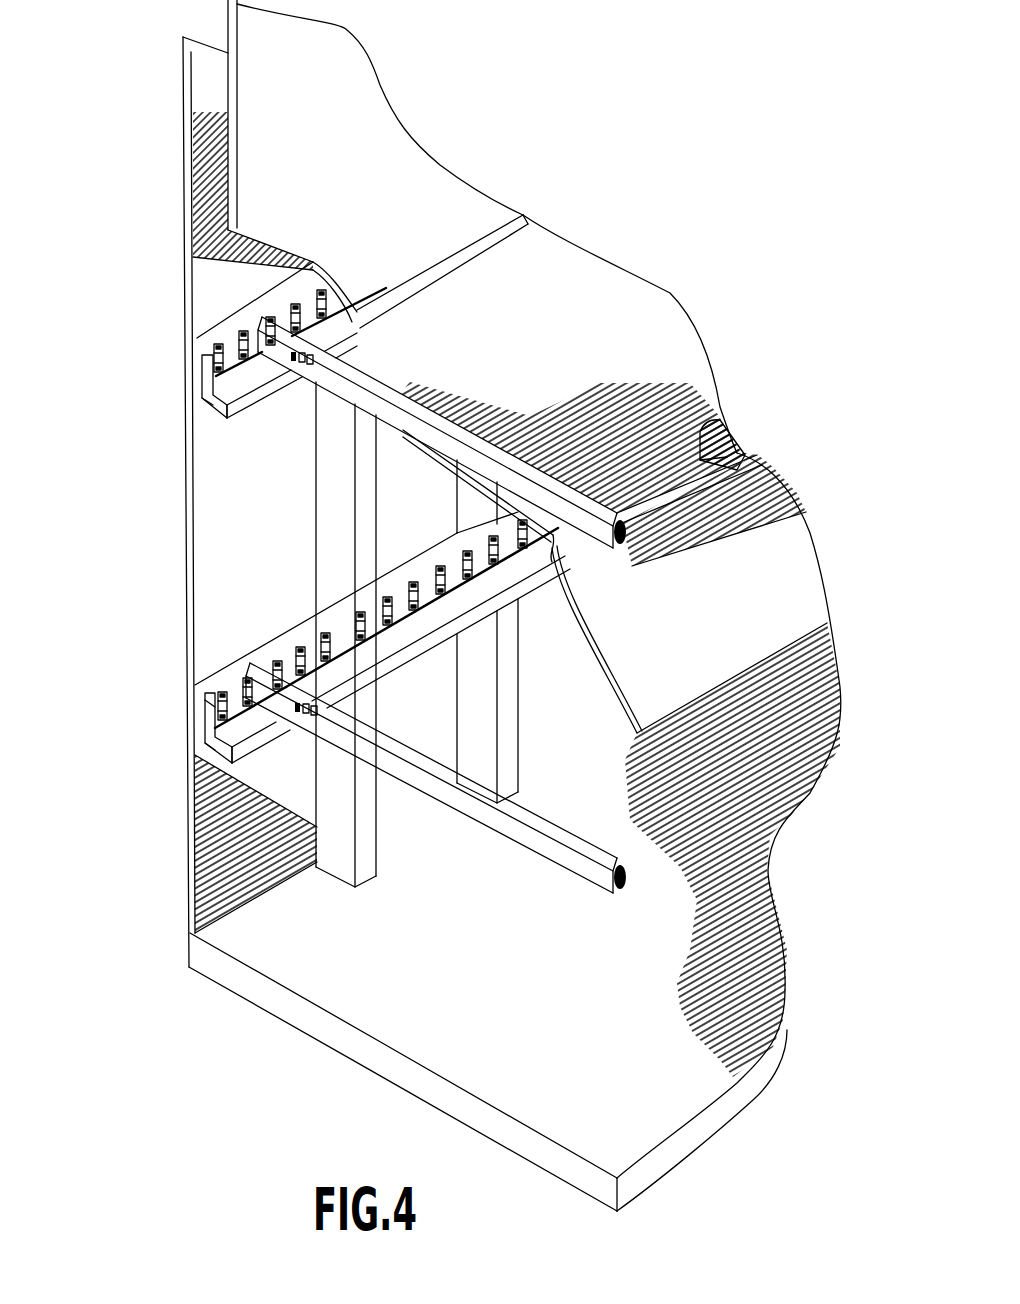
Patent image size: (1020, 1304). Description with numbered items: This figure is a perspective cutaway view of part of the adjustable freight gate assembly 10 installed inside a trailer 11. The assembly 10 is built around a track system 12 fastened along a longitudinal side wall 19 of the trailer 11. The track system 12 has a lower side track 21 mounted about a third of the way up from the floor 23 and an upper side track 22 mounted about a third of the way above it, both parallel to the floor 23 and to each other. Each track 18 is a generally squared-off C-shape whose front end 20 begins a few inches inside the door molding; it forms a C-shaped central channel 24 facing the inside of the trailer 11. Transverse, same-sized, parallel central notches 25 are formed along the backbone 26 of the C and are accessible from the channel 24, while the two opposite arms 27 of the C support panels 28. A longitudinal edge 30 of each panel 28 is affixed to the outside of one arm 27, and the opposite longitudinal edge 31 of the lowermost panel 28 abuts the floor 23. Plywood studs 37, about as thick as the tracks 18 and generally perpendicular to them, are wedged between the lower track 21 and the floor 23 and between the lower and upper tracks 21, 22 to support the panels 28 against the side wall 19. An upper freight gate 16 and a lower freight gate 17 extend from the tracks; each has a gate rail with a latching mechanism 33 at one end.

The adjustable freight gate assembly 10 is at (95, 213).
The trailer 11 is at (262, 1013).
The track system 12 is at (170, 366).
The upper freight gate 16 is at (393, 374).
The lower freight gate 17 is at (543, 862).
The track 18 is at (266, 318).
The longitudinal side wall 19 is at (269, 555).
The front end 20 is at (220, 678).
The lower side track 21 is at (206, 760).
The upper side track 22 is at (200, 402).
The floor 23 is at (485, 983).
The central channel 24 is at (205, 402).
The central notches 25 is at (318, 298).
The backbone 26 is at (200, 730).
The arms 27 is at (268, 395).
The panels 28 is at (374, 185).
The longitudinal edge 30 is at (408, 286).
The opposite longitudinal edge 31 is at (238, 128).
The latching mechanism 33 is at (258, 645).
The plywood studs 37 is at (347, 525).